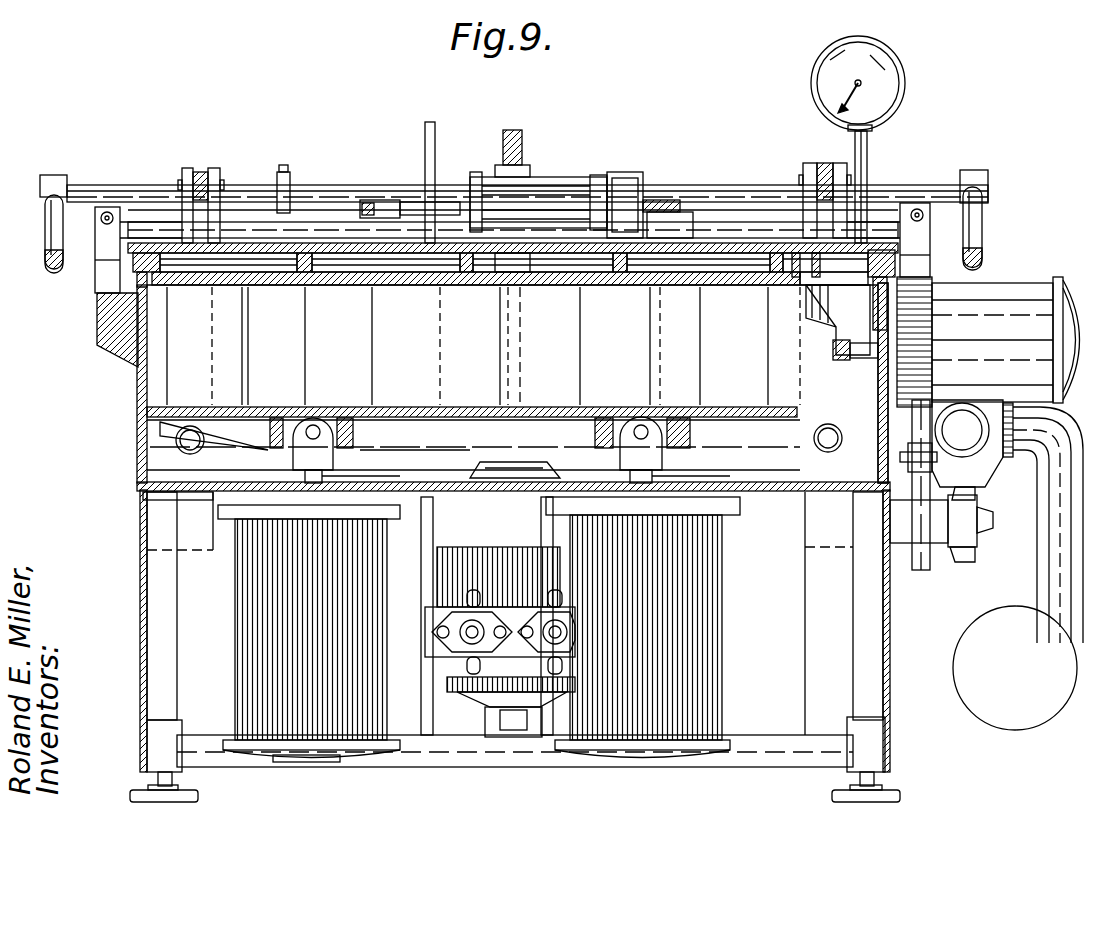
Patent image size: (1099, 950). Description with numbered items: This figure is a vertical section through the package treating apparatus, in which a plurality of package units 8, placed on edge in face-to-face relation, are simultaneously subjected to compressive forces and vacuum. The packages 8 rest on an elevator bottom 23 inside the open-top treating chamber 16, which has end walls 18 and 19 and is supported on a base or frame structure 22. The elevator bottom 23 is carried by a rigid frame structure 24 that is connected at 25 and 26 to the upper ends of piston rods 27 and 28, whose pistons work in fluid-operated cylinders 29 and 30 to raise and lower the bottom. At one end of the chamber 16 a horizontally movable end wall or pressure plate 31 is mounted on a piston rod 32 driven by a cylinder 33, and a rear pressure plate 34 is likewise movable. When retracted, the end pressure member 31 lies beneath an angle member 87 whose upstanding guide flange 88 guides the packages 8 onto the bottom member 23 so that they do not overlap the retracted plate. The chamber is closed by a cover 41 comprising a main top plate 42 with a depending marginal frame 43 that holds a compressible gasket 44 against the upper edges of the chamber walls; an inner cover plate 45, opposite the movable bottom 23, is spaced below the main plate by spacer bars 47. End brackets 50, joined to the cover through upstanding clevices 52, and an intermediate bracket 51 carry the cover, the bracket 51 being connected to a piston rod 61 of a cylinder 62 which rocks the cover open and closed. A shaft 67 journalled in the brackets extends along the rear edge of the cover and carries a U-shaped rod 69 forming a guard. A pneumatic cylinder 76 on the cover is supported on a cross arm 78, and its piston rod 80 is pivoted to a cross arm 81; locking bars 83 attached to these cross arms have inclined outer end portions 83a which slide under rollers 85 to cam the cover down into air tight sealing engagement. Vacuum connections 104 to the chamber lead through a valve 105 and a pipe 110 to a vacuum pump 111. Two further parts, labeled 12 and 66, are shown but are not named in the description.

The package unit 8 is at (185, 350).
The base plate 12 is at (255, 480).
The treating chamber 16 is at (462, 362).
The end wall 18 is at (147, 424).
The end wall 19 is at (878, 404).
The base or frame structure 22 is at (140, 567).
The elevator bottom 23 is at (408, 407).
The rigid frame structure 24 is at (428, 445).
The connection 25 is at (641, 428).
The connection 26 is at (314, 428).
The piston rod 27 is at (665, 476).
The piston rod 28 is at (395, 478).
The cylinder 29 is at (690, 620).
The cylinder 30 is at (260, 607).
The movable end wall 31 is at (800, 310).
The piston rod 32 is at (862, 360).
The cylinder 33 is at (1030, 300).
The rear pressure plate 34 is at (480, 400).
The cover 41 is at (712, 235).
The top plate 42 is at (742, 243).
The depending marginal frame 43 is at (134, 263).
The compressible gasket 44 is at (130, 296).
The inner cover plate 45 is at (495, 265).
The spacing bars 47 is at (440, 276).
The end bracket 50 is at (202, 170).
The intermediate bracket 51 is at (518, 130).
The upstanding clevice 52 is at (215, 172).
The piston rod 61 is at (525, 350).
The cylinder 62 is at (490, 567).
The bracket arm 66 is at (96, 296).
The shaft 67 is at (766, 190).
The U-shaped rod 69 is at (46, 236).
The pneumatic cylinder 76 is at (553, 190).
The cross arm 78 is at (662, 200).
The piston rod 80 is at (442, 205).
The cross arm 81 is at (370, 200).
The locking bar 83 is at (295, 210).
The outer end portion 83a is at (122, 226).
The roller 85 is at (102, 210).
The angle member 87 is at (842, 286).
The guide flange portion 88 is at (822, 268).
The vacuum connection 104 is at (176, 444).
The valve 105 is at (978, 462).
The pipe 110 is at (1044, 552).
The vacuum pump 111 is at (981, 622).